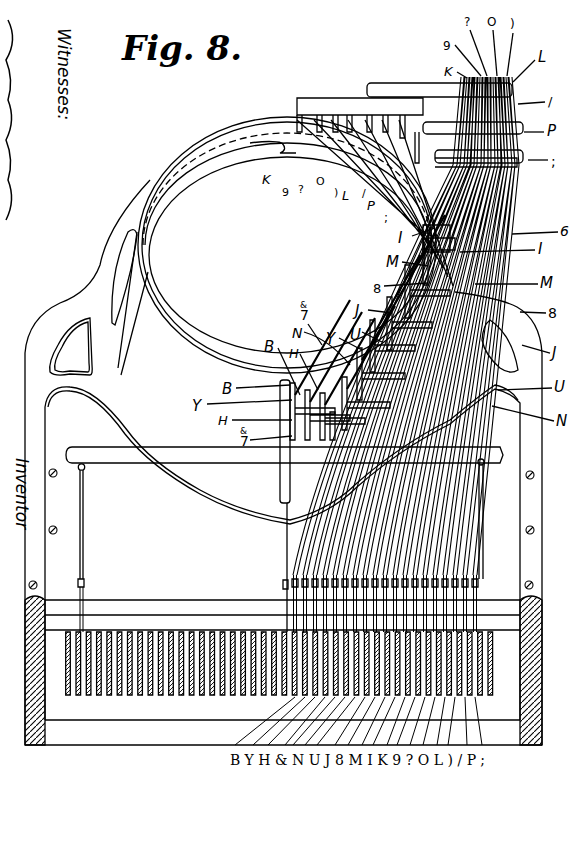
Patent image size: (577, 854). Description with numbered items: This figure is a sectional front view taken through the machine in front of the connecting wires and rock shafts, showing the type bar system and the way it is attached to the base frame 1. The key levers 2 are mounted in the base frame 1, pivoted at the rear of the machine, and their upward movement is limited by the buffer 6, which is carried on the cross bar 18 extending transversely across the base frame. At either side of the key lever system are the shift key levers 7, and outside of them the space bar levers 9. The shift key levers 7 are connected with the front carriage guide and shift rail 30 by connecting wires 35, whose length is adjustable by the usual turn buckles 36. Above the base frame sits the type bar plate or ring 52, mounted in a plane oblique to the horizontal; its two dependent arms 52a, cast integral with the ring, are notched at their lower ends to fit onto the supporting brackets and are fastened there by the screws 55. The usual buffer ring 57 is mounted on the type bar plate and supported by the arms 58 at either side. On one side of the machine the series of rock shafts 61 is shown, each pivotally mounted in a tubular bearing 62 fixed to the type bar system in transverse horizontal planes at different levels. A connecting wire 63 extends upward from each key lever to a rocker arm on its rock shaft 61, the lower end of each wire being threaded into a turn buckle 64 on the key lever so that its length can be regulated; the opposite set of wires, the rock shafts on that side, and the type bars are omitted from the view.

The base frame 1 is at (25, 662).
The key levers 2 is at (204, 697).
The buffer 6 is at (520, 621).
The shift key levers 7 is at (83, 697).
The space bar levers 9 is at (67, 668).
The cross bar 18 is at (214, 604).
The front carriage guide and shift rail 30 is at (121, 456).
The connecting wires 35 is at (85, 537).
The turn buckles 36 is at (86, 584).
The type bar plate or ring 52 is at (115, 219).
The dependent arms 52a is at (44, 488).
The screws 55 is at (37, 582).
The buffer ring 57 is at (200, 135).
The arms 58 is at (278, 138).
The rock shafts 61 is at (382, 88).
The tubular bearings 62 is at (405, 90).
The connecting wires 63 is at (285, 535).
The turn buckles 64 is at (283, 583).